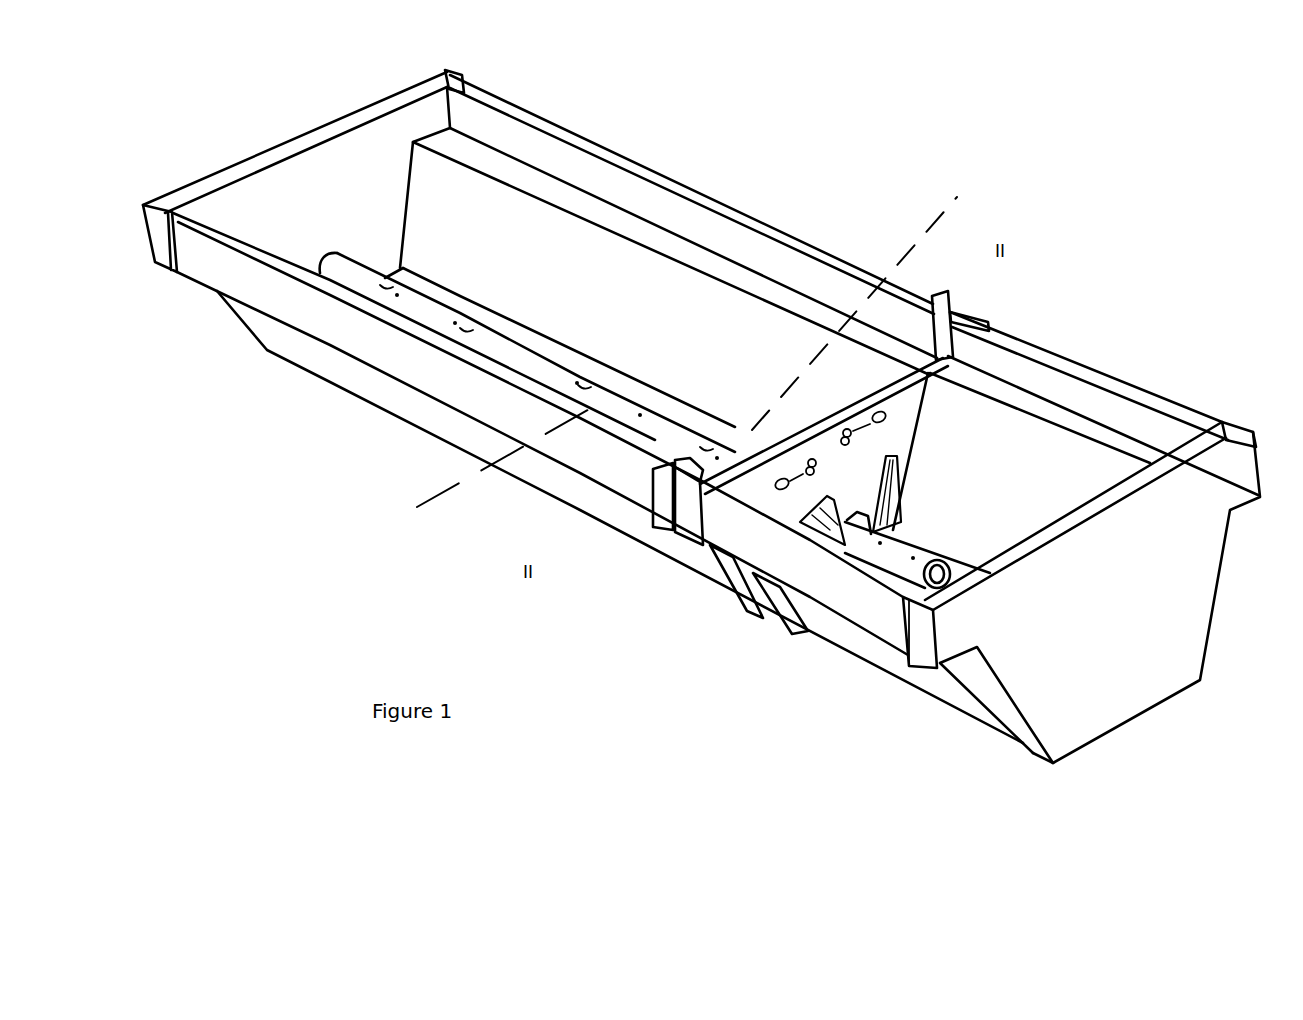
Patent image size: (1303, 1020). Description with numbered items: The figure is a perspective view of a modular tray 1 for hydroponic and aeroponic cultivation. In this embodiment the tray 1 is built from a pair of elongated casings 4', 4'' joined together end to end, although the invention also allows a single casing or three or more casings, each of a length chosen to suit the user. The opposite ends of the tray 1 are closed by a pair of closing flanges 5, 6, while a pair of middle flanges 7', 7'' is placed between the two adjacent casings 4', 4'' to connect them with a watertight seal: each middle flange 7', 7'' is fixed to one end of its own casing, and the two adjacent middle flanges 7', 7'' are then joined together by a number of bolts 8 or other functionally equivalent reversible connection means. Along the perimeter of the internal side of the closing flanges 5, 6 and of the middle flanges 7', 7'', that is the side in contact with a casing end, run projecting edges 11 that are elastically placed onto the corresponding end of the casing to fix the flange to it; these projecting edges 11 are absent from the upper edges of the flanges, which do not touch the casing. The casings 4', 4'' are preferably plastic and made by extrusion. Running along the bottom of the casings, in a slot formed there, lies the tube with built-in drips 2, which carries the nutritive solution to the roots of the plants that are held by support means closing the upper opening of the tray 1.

The tray 1 is at (700, 147).
The tube with built-in drips 2 is at (520, 357).
The casing 4' is at (675, 225).
The casing 4'' is at (1089, 361).
The closing flange 5 is at (1153, 590).
The closing flange 6 is at (280, 180).
The middle flange 7' is at (735, 610).
The middle flange 7'' is at (780, 633).
The bolts 8 is at (898, 520).
The projecting edges 11 is at (450, 73).